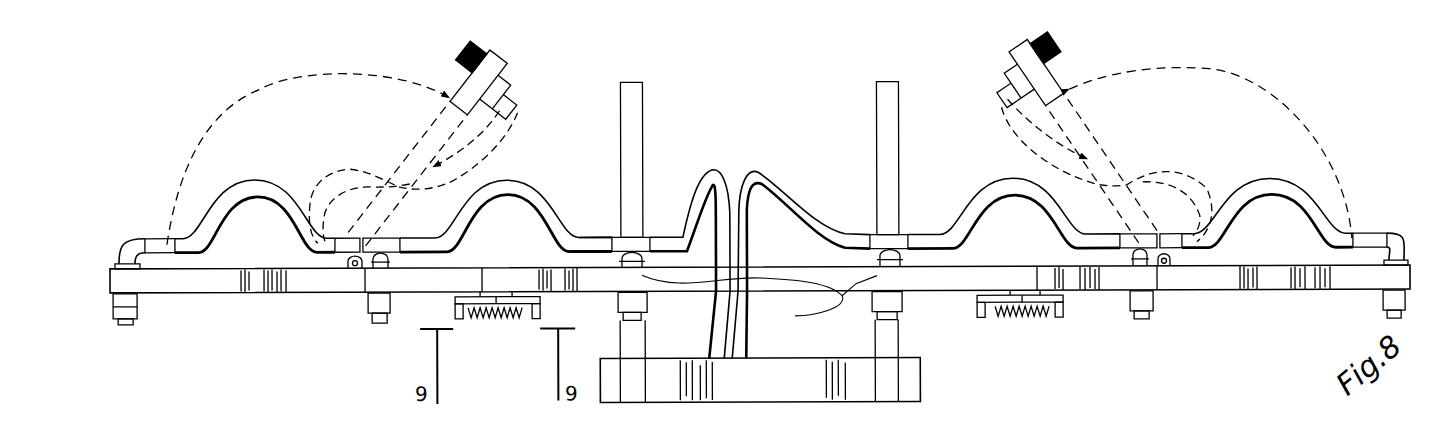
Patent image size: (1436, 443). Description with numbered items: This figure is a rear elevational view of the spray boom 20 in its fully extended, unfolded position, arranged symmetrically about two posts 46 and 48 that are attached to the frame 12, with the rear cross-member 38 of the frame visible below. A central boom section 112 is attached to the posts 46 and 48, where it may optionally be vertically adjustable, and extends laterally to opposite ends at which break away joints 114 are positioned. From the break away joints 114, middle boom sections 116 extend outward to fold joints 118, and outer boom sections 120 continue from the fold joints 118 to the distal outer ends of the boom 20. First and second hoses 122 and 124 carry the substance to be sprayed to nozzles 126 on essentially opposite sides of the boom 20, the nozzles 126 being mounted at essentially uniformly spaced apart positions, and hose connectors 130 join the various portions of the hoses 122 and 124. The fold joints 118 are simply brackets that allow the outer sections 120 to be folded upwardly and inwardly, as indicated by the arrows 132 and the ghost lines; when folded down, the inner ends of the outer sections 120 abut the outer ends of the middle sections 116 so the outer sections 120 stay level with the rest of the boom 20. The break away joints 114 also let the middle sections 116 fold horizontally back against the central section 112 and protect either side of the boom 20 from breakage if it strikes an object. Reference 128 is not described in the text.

The frame 12 is at (889, 415).
The spray boom 20 is at (1306, 292).
The rear cross-member 38 is at (873, 382).
The post 46 is at (637, 98).
The post 48 is at (883, 98).
The central boom section 112 is at (700, 215).
The break away joint 114 is at (512, 320).
The middle boom section 116 is at (452, 292).
The fold joint 118 is at (348, 264).
The outer boom section 120 is at (277, 294).
The first hose 122 is at (700, 268).
The second hose 124 is at (740, 198).
The nozzle 126 is at (148, 297).
The tie rod 128 is at (759, 305).
The hose connector 130 is at (120, 248).
The arrow 132 is at (187, 173).